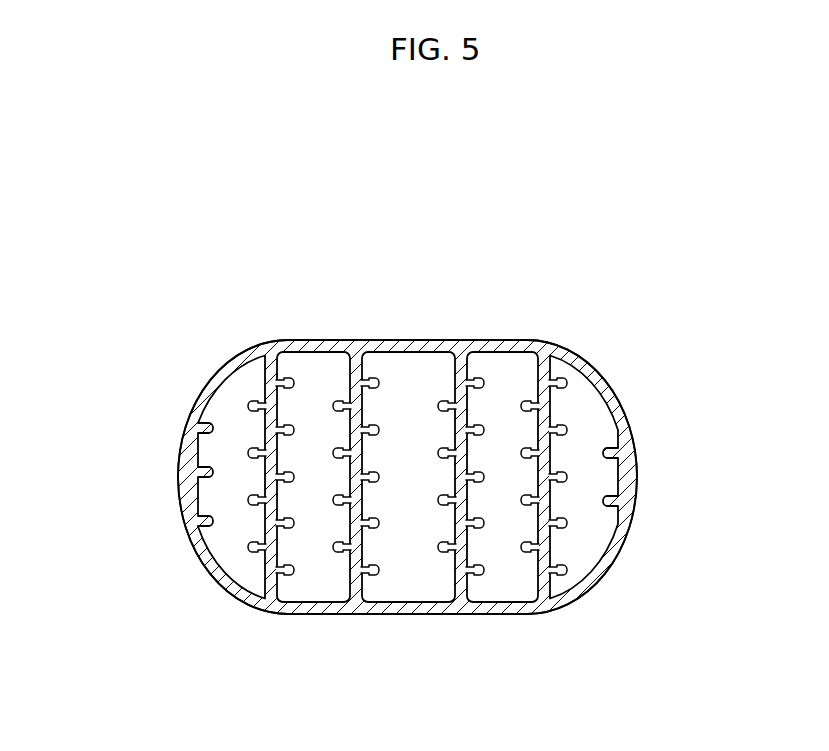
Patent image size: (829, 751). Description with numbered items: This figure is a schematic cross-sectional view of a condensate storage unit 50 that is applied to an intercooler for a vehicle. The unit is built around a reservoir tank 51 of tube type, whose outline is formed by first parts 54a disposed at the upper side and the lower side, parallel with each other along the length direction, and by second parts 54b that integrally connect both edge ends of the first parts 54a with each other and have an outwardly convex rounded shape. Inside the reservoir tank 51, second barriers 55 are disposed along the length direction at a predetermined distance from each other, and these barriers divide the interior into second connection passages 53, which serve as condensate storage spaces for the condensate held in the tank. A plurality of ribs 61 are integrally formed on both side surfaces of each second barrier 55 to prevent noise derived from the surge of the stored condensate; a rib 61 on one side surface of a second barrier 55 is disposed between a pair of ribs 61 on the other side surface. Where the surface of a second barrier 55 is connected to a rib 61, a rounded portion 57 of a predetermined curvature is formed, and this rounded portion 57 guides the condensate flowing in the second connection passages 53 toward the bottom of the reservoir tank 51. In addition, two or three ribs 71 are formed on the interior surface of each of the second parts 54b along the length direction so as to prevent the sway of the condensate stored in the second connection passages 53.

The condensate storage unit 50 is at (440, 160).
The reservoir tank 51 is at (133, 243).
The second connection passage 53 is at (407, 490).
The first part 54a is at (385, 343).
The second part 54b is at (185, 461).
The second barrier 55 is at (337, 478).
The rounded portion 57 is at (214, 432).
The rib 61 is at (478, 525).
The rib 71 is at (199, 553).